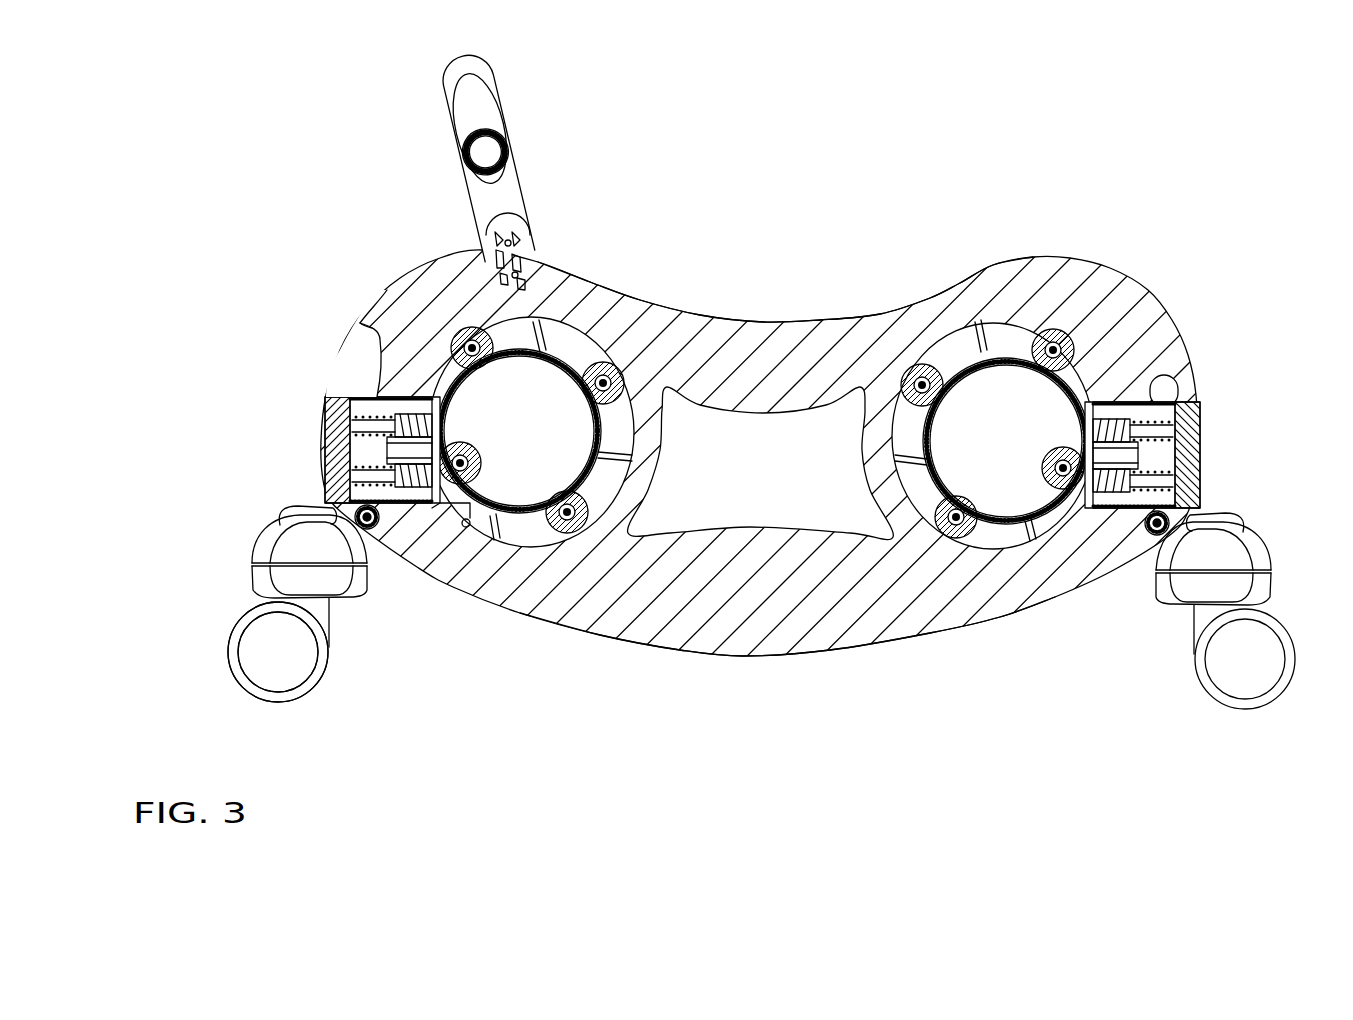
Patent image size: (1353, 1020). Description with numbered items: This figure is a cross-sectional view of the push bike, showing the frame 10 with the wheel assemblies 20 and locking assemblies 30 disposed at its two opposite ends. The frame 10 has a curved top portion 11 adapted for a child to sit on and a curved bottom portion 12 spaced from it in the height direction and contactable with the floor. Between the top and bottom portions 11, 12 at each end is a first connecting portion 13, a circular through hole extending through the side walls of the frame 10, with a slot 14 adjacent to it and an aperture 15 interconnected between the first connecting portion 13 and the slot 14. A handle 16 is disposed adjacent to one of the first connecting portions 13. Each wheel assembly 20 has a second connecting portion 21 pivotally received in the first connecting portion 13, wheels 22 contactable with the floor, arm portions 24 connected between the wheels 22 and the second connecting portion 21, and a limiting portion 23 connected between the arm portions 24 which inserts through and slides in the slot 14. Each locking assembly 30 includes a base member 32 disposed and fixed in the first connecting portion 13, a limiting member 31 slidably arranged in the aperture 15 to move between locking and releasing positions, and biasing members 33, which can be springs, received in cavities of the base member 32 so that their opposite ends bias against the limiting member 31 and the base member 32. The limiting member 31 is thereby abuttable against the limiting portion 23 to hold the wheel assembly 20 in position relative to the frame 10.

The frame 10 is at (703, 240).
The curved top portion 11 is at (802, 322).
The curved bottom portion 12 is at (737, 657).
The first connecting portion 13 is at (537, 330).
The slot 14 is at (365, 378).
The aperture 15 is at (372, 390).
The handle 16 is at (468, 63).
The wheel assembly 20 is at (757, 597).
The second connecting portion 21 is at (500, 335).
The wheel 22 is at (273, 675).
The limiting portion 23 is at (368, 530).
The arm portion 24 is at (293, 517).
The locking assembly 30 is at (338, 504).
The limiting member 31 is at (345, 440).
The base member 32 is at (448, 515).
The biasing member 33 is at (372, 455).